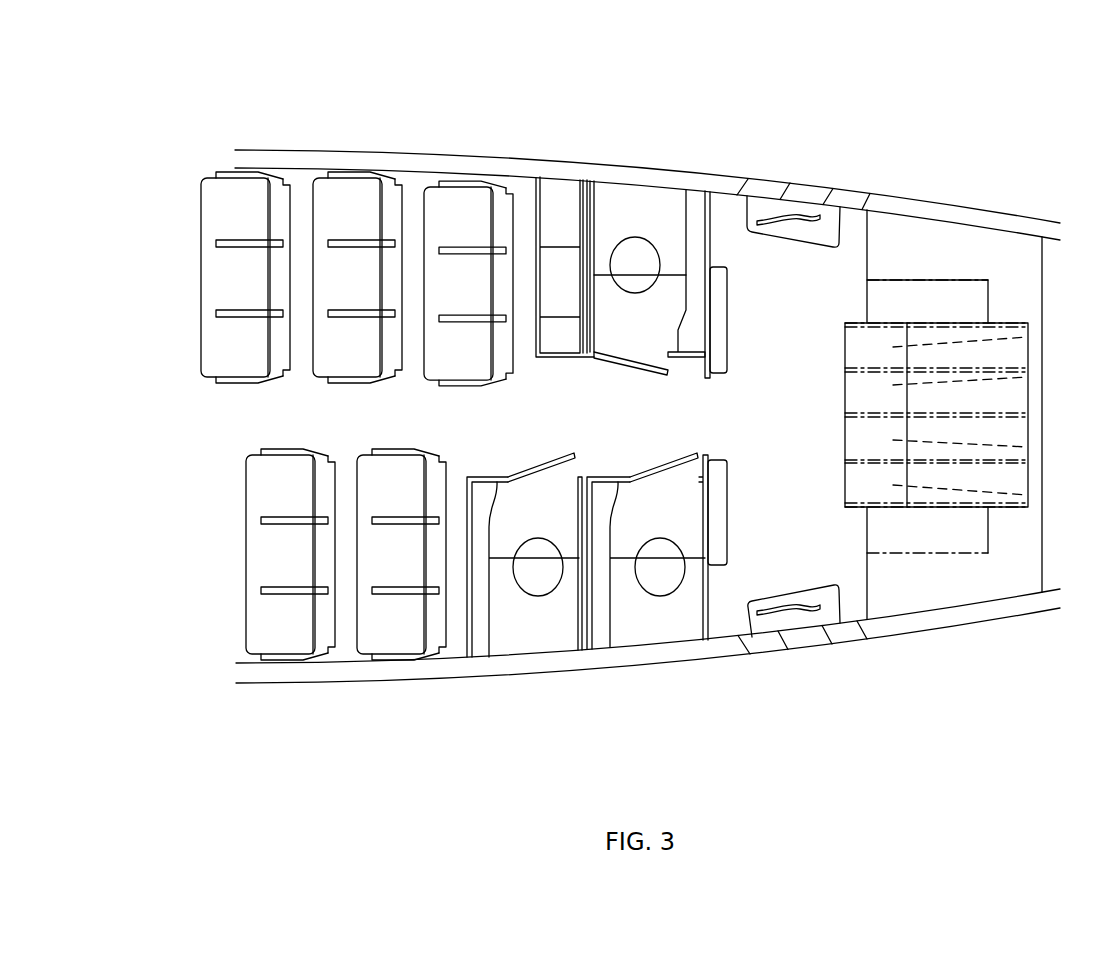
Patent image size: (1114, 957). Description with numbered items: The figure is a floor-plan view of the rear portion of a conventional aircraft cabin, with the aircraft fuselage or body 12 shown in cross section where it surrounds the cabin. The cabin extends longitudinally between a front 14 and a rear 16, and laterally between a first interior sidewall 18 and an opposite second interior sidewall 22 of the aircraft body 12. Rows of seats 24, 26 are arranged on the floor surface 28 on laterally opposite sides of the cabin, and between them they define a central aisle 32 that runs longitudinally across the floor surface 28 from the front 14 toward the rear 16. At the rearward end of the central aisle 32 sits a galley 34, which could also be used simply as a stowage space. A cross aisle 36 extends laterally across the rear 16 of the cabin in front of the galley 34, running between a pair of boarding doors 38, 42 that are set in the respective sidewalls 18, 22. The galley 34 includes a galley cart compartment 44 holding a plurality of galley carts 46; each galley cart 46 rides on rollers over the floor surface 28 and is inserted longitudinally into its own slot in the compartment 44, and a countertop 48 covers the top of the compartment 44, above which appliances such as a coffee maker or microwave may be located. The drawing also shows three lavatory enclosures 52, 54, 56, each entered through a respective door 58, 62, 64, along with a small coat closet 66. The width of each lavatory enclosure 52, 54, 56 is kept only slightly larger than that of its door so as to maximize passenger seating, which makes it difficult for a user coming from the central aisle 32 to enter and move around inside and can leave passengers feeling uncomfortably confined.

The aircraft fuselage or body 12 is at (573, 156).
The front of the cabin 14 is at (153, 612).
The rear of the cabin 16 is at (868, 667).
The first interior sidewall 18 is at (612, 179).
The second interior sidewall 22 is at (681, 640).
The rows of seats 24 is at (196, 282).
The rows of seats 26 is at (228, 562).
The floor surface 28 is at (270, 428).
The central aisle 32 is at (435, 416).
The galley 34 is at (897, 431).
The cross aisle 36 is at (787, 499).
The boarding door 38 is at (840, 190).
The boarding door 42 is at (772, 656).
The galley cart compartment 44 is at (841, 386).
The galley carts 46 is at (1060, 493).
The countertop 48 is at (855, 495).
The lavatory enclosure 52 is at (653, 225).
The lavatory enclosure 54 is at (519, 625).
The lavatory enclosure 56 is at (637, 620).
The door 58 is at (630, 366).
The door 62 is at (556, 459).
The door 64 is at (666, 461).
The coat closet 66 is at (556, 211).